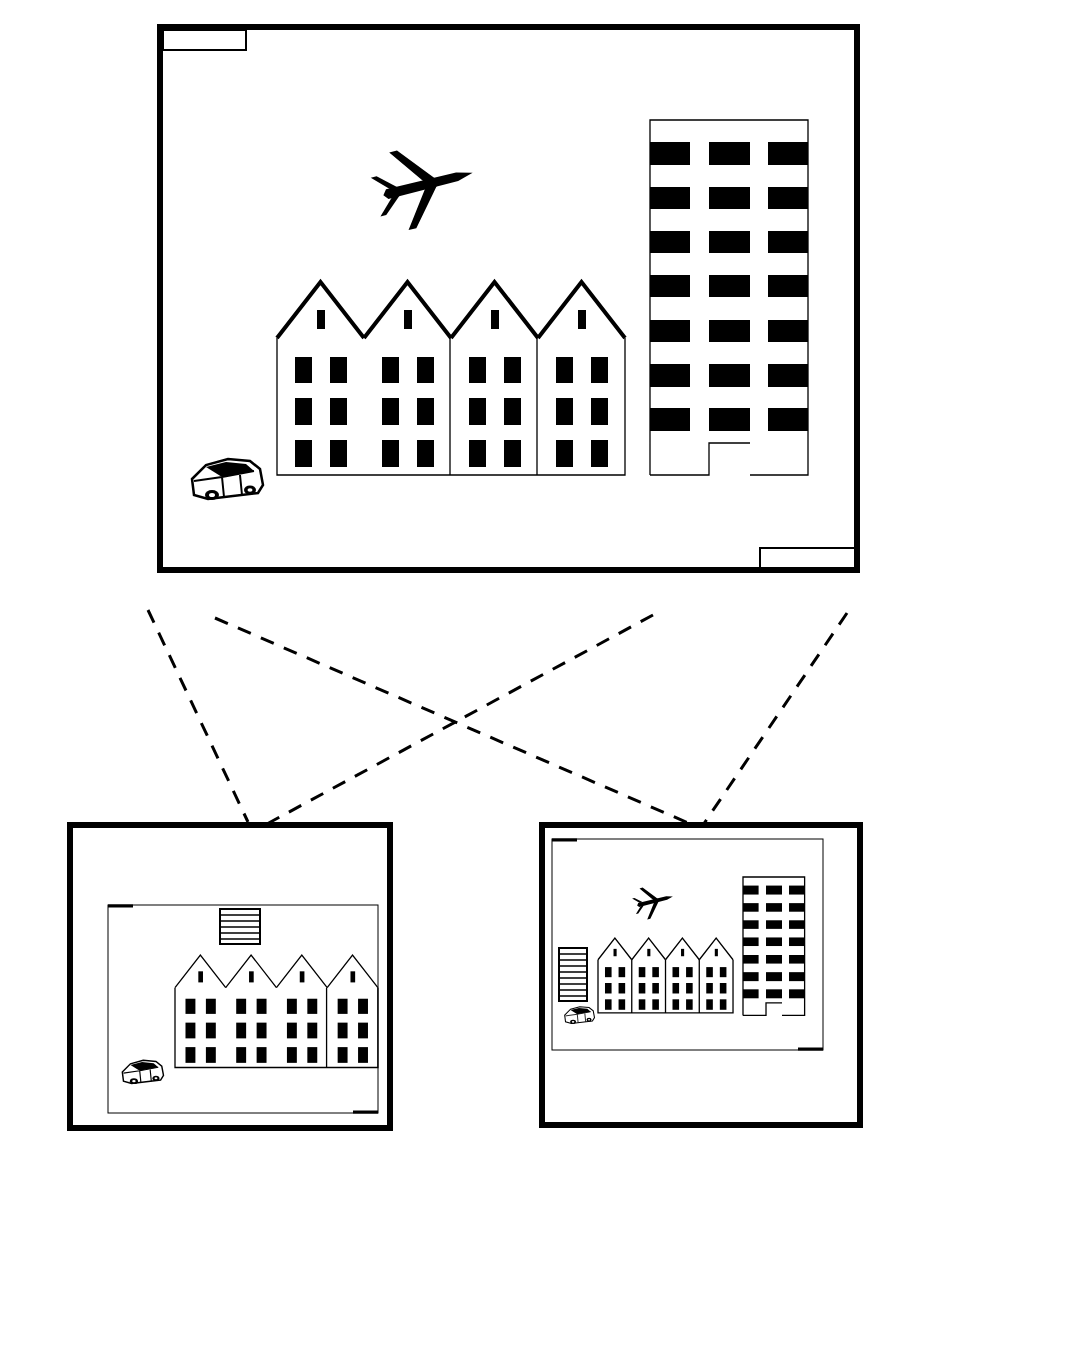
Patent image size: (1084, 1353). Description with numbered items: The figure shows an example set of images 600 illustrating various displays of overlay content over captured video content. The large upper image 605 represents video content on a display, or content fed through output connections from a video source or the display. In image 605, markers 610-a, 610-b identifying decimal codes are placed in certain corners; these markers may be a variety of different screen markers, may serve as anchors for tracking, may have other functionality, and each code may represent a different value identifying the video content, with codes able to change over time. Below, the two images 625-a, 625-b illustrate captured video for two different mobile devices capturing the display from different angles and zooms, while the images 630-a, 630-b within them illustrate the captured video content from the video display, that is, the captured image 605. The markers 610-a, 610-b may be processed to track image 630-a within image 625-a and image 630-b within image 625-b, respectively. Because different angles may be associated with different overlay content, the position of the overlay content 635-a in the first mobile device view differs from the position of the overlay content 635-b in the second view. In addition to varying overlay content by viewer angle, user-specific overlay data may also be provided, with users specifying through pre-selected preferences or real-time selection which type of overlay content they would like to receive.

The set of images 600 is at (808, 1270).
The image 605 is at (157, 288).
The marker 610-a is at (157, 29).
The marker 610-b is at (860, 556).
The image of captured video 625-a is at (390, 1078).
The image of captured video 625-b is at (542, 1083).
The captured video content image 630-a is at (345, 905).
The captured video content image 630-b is at (823, 965).
The overlay content 635-a is at (214, 914).
The overlay content 635-b is at (566, 943).